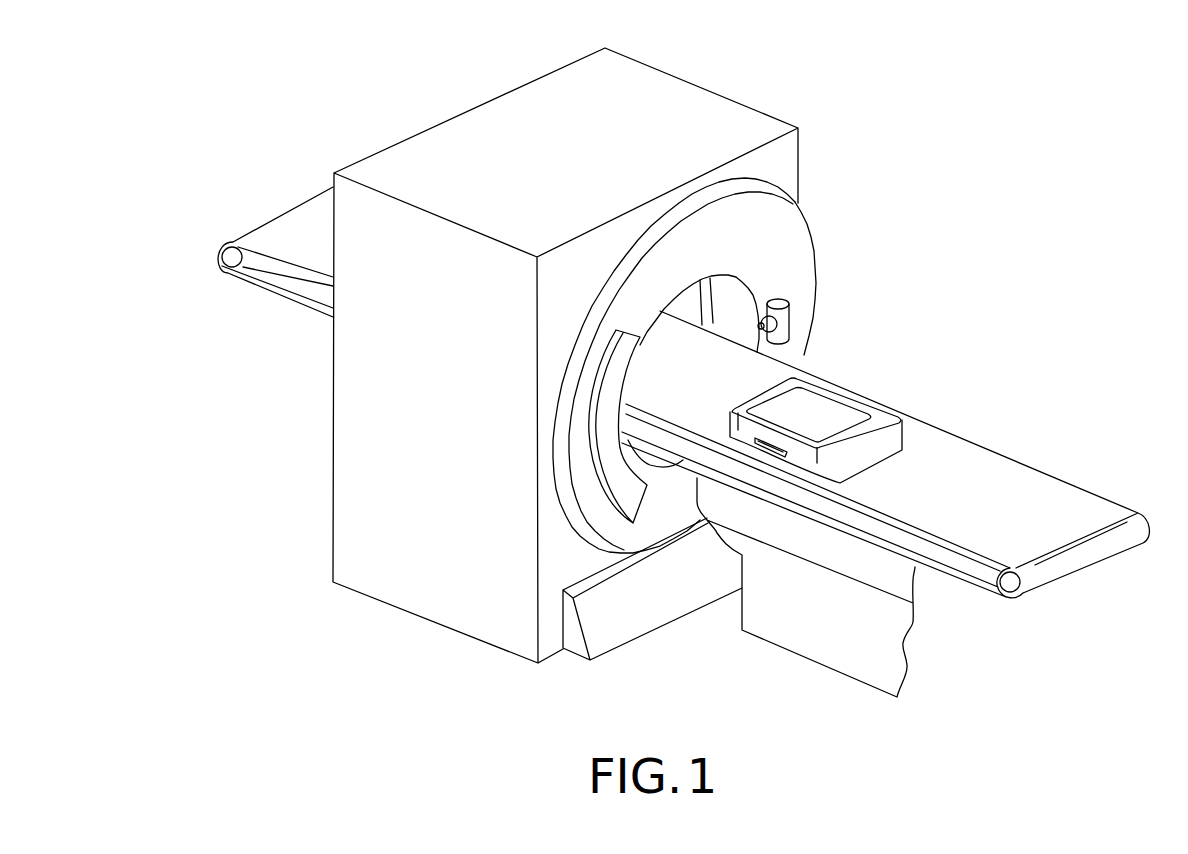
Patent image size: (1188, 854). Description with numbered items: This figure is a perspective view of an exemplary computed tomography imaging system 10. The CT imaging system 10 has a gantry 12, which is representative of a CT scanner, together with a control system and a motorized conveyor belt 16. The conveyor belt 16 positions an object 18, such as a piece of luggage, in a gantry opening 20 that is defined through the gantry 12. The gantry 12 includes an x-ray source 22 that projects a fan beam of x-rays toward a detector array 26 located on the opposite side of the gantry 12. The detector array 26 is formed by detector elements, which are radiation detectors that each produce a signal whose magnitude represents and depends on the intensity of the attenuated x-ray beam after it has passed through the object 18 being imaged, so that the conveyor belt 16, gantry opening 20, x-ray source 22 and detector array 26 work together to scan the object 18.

The CT imaging system 10 is at (1003, 259).
The gantry 12 is at (777, 238).
The motorized conveyor belt 16 is at (888, 552).
The object 18 is at (822, 418).
The gantry opening 20 is at (682, 299).
The x-ray source 22 is at (777, 318).
The detector array 26 is at (607, 450).